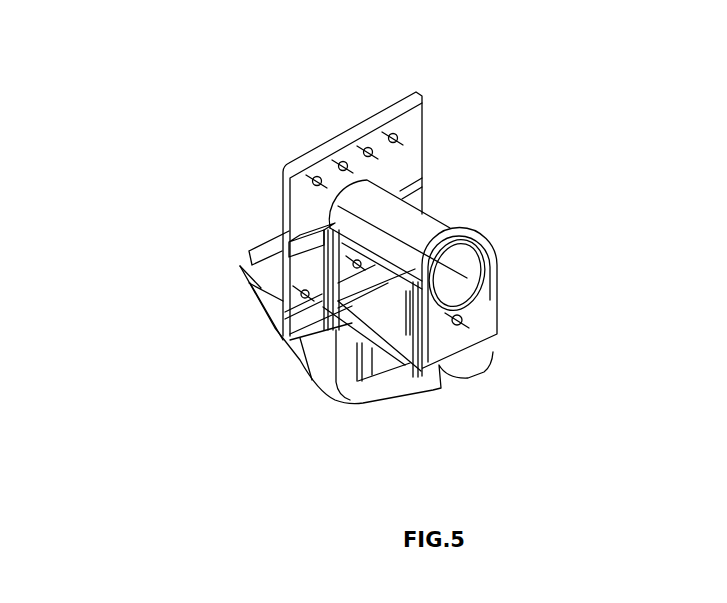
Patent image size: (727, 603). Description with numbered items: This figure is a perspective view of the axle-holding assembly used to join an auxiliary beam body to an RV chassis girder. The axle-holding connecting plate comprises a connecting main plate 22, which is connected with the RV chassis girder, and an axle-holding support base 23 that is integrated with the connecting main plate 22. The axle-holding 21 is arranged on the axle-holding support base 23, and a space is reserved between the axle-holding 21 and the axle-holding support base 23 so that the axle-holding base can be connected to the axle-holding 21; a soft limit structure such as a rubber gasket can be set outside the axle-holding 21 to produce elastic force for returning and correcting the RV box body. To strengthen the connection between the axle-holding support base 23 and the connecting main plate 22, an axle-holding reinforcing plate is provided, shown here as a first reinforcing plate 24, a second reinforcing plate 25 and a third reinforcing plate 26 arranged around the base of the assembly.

The axle-holding 21 is at (413, 224).
The connecting main plate 22 is at (399, 156).
The axle-holding support base 23 is at (481, 309).
The first reinforcing plate 24 is at (310, 237).
The second reinforcing plate 25 is at (251, 262).
The third reinforcing plate 26 is at (316, 333).